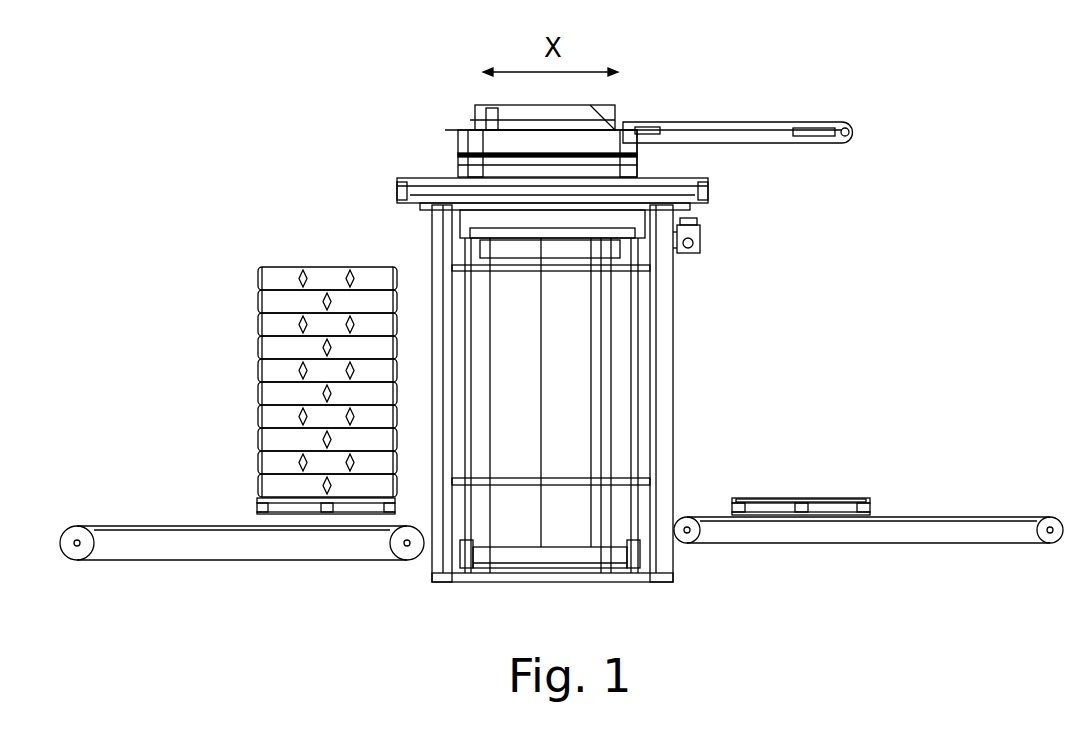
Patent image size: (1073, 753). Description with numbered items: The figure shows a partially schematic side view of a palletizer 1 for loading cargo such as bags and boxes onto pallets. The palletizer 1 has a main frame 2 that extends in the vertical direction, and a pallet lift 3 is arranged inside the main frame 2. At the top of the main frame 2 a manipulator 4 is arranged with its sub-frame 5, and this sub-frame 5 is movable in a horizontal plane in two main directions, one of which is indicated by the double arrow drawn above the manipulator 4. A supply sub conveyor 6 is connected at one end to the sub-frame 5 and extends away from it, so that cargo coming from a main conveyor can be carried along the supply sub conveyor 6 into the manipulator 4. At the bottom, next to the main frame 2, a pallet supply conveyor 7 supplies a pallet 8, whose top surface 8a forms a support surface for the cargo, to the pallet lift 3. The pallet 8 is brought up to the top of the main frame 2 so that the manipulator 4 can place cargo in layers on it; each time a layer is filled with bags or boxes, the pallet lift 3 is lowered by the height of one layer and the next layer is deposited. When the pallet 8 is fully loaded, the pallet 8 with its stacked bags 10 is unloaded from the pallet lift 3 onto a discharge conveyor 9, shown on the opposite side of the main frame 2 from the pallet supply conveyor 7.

The palletizer 1 is at (324, 76).
The main frame 2 is at (665, 327).
The pallet lift 3 is at (578, 537).
The manipulator 4 is at (520, 135).
The sub-frame 5 is at (462, 158).
The supply sub conveyor 6 is at (750, 130).
The pallet supply conveyor 7 is at (922, 532).
The pallet 8 is at (325, 515).
The top surface 8a is at (847, 498).
The discharge conveyor 9 is at (128, 545).
The bags 10 is at (283, 278).